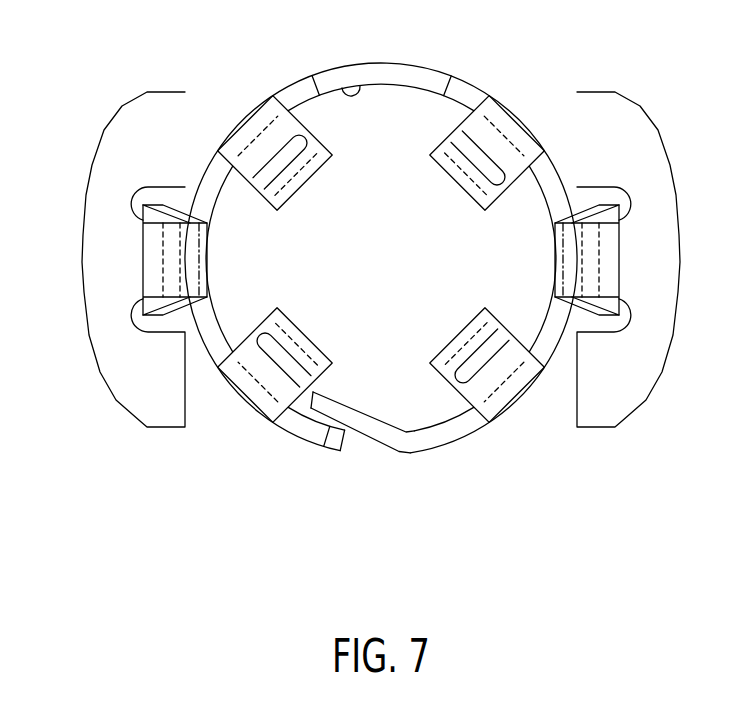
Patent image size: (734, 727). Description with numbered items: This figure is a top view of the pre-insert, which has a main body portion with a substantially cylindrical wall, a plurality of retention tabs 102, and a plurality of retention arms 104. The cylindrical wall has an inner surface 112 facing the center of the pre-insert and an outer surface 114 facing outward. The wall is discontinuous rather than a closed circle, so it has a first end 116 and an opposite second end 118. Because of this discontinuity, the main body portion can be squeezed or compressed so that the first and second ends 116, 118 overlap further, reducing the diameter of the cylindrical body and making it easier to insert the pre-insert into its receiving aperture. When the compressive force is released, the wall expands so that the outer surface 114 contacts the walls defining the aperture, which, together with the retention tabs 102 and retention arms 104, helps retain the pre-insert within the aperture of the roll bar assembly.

The retention tab 102 is at (141, 268).
The retention arm 104 is at (308, 187).
The inner surface 112 is at (358, 83).
The outer surface 114 is at (405, 64).
The first end 116 is at (361, 412).
The second end 118 is at (321, 448).